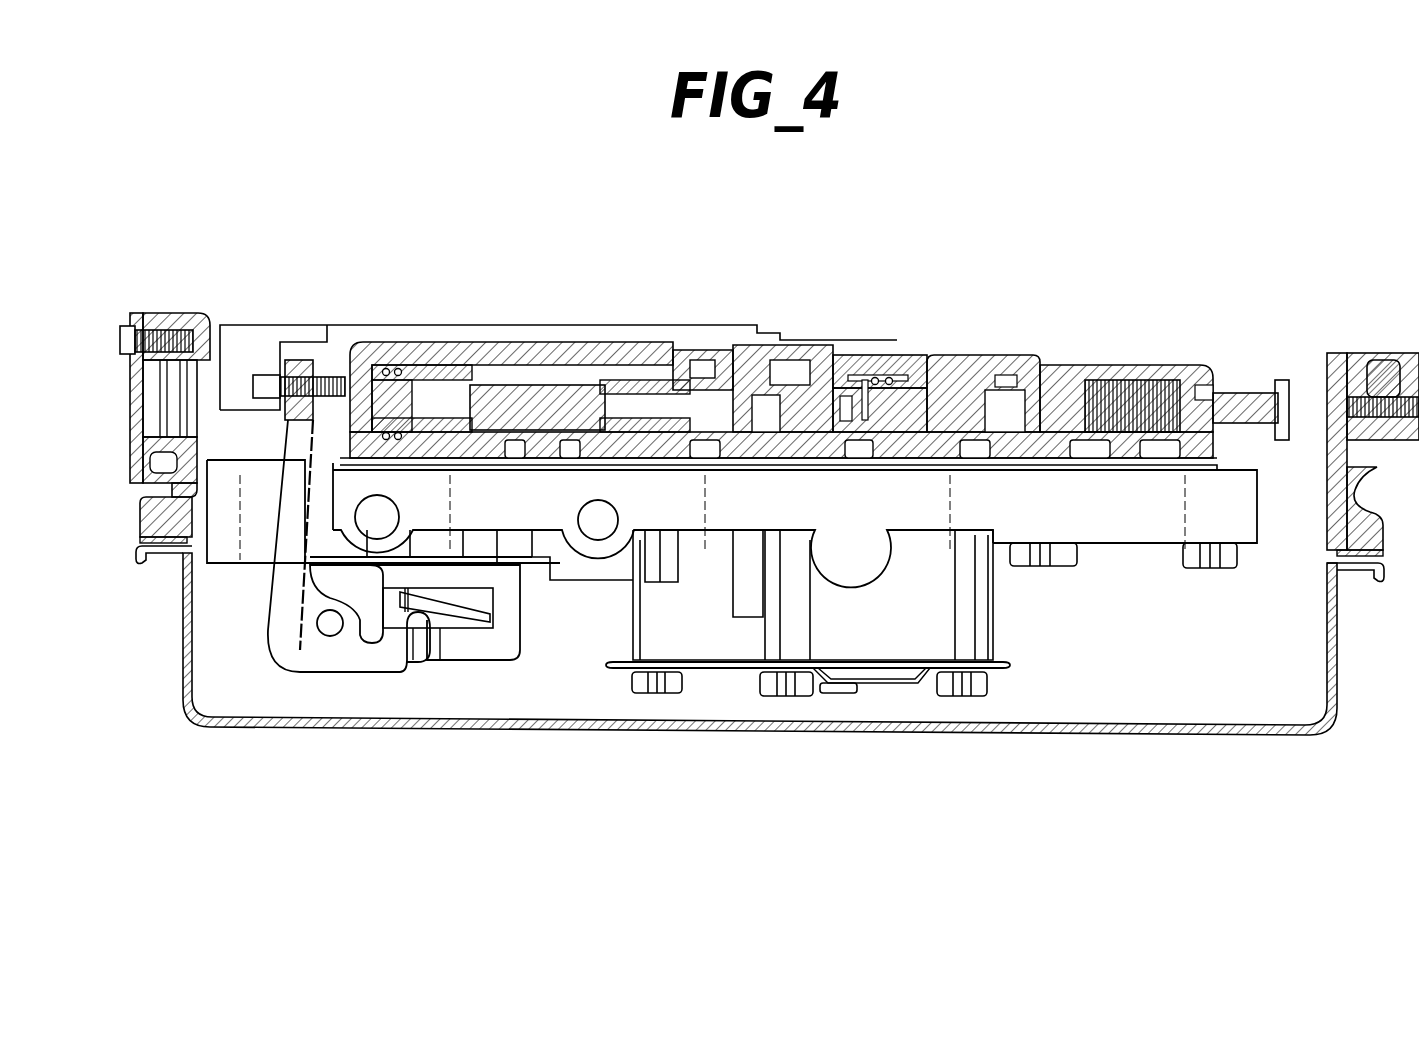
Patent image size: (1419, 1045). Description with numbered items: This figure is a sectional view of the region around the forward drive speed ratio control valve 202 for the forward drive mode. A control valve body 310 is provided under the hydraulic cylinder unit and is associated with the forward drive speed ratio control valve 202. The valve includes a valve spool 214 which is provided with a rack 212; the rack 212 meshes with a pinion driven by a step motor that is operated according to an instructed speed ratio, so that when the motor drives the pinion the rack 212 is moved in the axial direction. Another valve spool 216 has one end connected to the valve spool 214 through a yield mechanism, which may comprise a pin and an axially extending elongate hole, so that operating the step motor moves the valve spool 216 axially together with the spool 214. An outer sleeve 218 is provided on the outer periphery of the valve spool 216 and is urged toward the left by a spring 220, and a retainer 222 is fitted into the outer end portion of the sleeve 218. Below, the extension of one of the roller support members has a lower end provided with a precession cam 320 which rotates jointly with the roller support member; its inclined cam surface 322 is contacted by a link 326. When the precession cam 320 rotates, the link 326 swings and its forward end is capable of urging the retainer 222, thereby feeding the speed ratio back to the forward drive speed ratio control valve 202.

The forward drive speed ratio control valve 202 is at (795, 339).
The rack 212 is at (1178, 368).
The valve spool 214 is at (957, 385).
The valve spool 216 is at (713, 395).
The outer sleeve 218 is at (617, 395).
The spring 220 is at (460, 340).
The retainer 222 is at (362, 338).
The control valve body 310 is at (1258, 558).
The precession cam 320 is at (472, 617).
The cam surface 322 is at (445, 625).
The link 326 is at (283, 607).